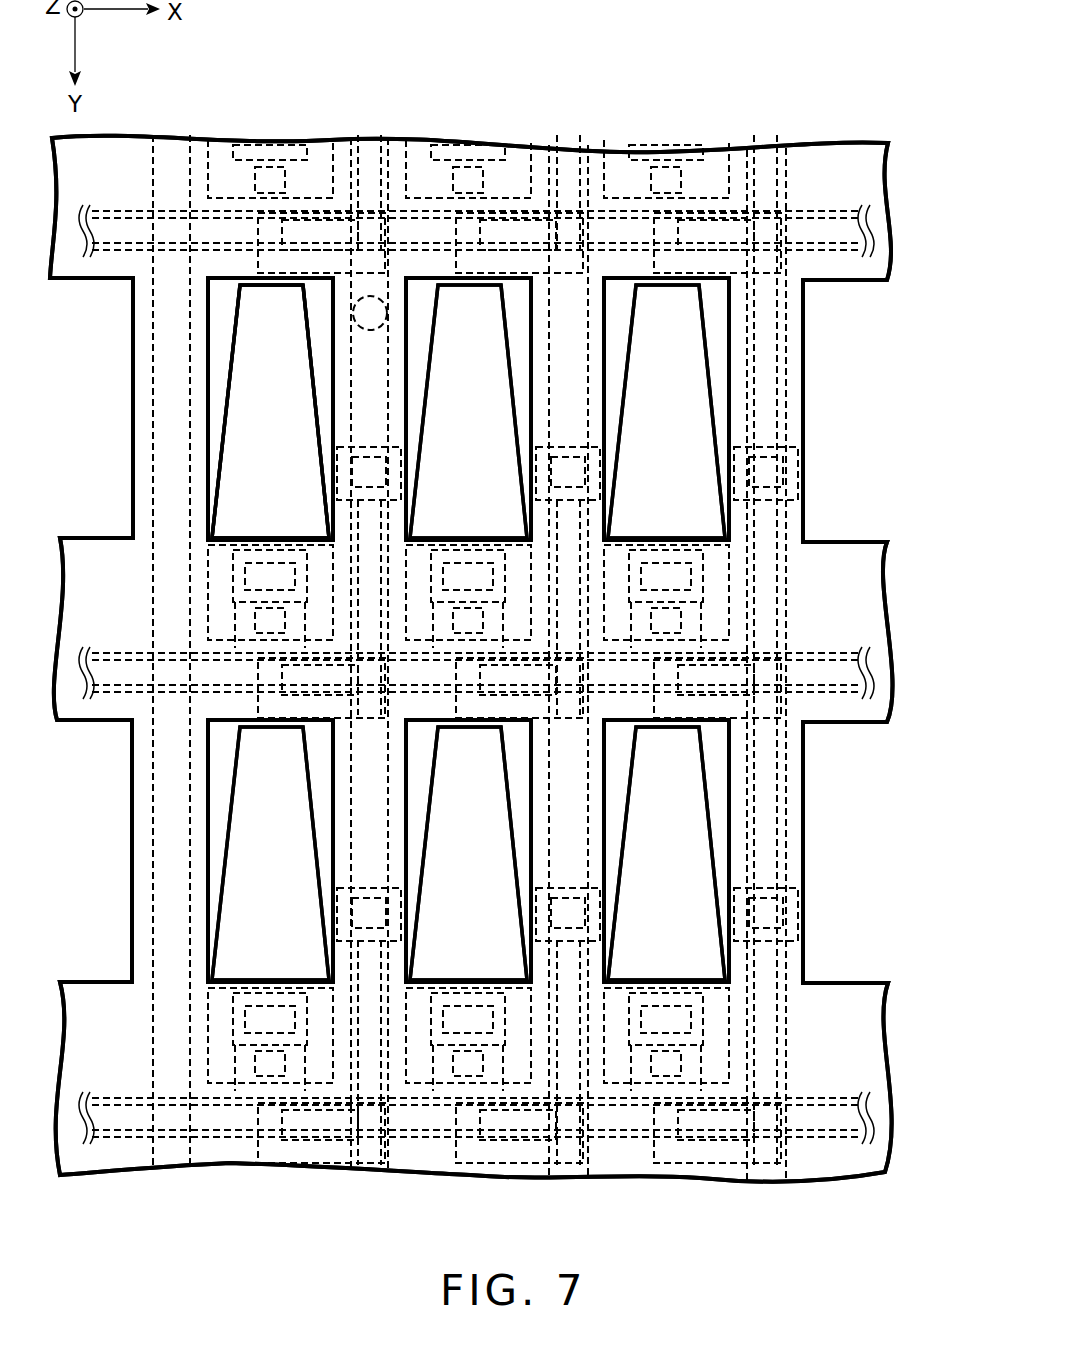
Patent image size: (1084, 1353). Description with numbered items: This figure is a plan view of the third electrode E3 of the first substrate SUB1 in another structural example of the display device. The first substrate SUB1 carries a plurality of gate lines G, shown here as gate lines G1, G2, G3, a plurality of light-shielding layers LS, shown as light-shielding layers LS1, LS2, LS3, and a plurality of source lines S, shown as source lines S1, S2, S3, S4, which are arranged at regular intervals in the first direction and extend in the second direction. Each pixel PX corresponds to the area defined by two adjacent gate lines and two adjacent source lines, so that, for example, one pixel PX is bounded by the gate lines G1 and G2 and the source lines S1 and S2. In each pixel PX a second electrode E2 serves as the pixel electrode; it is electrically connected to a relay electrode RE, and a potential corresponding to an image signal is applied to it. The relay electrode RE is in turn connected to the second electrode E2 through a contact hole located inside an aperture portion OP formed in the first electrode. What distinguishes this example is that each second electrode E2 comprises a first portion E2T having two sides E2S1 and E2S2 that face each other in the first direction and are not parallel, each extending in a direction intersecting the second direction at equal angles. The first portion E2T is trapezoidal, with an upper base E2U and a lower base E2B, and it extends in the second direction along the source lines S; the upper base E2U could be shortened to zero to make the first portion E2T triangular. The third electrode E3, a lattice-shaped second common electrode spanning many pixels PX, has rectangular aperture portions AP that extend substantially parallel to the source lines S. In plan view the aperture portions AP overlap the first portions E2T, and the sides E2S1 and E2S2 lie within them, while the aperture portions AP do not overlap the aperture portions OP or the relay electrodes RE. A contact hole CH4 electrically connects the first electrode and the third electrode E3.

The first substrate SUB1 is at (908, 183).
The third electrode E3 is at (877, 583).
The gate lines G is at (519, 681).
The gate line G1 is at (878, 238).
The gate line G2 is at (878, 680).
The gate line G3 is at (878, 1124).
The source lines S is at (470, 689).
The source line S1 is at (170, 1166).
The source line S2 is at (370, 1172).
The source line S3 is at (565, 1167).
The source line S4 is at (766, 1178).
The light-shielding layers LS is at (888, 664).
The light-shielding layer LS1 is at (846, 232).
The light-shielding layer LS2 is at (840, 672).
The light-shielding layer LS3 is at (827, 1097).
The pixel PX is at (224, 262).
The aperture portion AP is at (206, 340).
The second electrode E2 is at (214, 447).
The upper base E2U is at (270, 285).
The side E2S1 is at (230, 370).
The side E2S2 is at (317, 405).
The lower base E2B is at (225, 548).
The first portion E2T is at (236, 483).
The aperture portion OP is at (225, 578).
The relay electrode RE is at (240, 640).
The contact hole CH4 is at (370, 332).